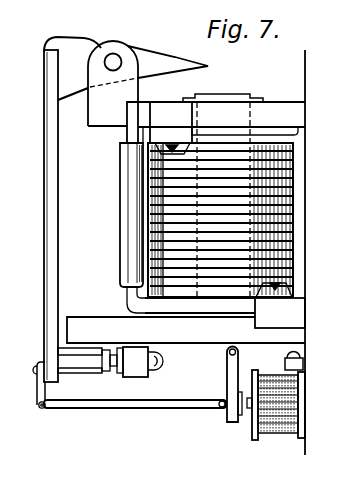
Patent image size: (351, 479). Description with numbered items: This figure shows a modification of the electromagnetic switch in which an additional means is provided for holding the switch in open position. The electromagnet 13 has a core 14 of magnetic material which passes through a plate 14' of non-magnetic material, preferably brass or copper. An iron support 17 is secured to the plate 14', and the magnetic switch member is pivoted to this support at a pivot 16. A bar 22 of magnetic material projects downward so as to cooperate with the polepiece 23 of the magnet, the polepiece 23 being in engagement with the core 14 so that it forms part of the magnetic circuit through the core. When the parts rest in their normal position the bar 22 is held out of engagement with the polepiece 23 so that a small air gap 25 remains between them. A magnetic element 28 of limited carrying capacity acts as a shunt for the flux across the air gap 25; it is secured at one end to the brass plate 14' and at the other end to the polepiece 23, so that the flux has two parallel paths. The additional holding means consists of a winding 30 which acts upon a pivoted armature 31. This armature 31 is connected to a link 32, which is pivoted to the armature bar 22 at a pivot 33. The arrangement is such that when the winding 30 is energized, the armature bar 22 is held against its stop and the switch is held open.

The electromagnet 13 is at (290, 234).
The core 14 is at (223, 88).
The plate 14' is at (221, 199).
The pivot 16 is at (119, 56).
The iron support 17 is at (133, 83).
The bar 22 is at (44, 312).
The polepiece 23 is at (188, 335).
The air gap 25 is at (64, 320).
The magnetic element 28 is at (126, 142).
The winding 30 is at (277, 436).
The pivoted armature 31 is at (227, 375).
The link 32 is at (146, 407).
The pivot 33 is at (40, 408).